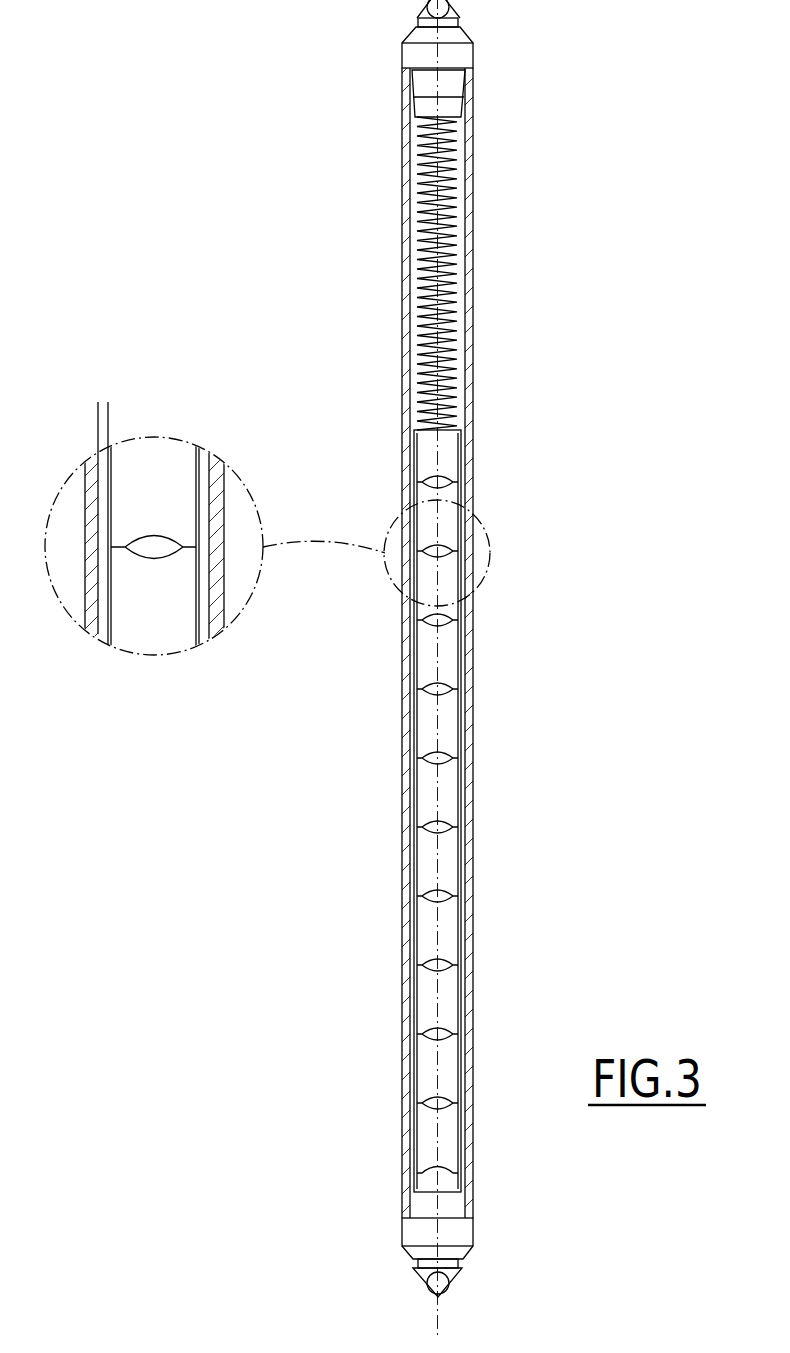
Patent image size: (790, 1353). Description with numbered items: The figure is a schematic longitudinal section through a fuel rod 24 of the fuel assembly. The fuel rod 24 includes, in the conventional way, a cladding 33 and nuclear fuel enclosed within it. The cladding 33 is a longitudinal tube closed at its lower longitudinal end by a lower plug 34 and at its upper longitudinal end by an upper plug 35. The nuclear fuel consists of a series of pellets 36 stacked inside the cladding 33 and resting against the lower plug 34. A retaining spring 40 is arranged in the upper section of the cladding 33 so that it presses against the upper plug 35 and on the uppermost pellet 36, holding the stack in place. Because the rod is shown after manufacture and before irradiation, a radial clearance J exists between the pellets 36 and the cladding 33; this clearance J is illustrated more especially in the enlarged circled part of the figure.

The fuel rod 24 is at (485, 463).
The cladding 33 is at (472, 874).
The lower plug 34 is at (458, 1237).
The upper plug 35 is at (458, 58).
The pellets 36 is at (450, 664).
The retaining spring 40 is at (452, 248).
The radial clearance J is at (167, 412).